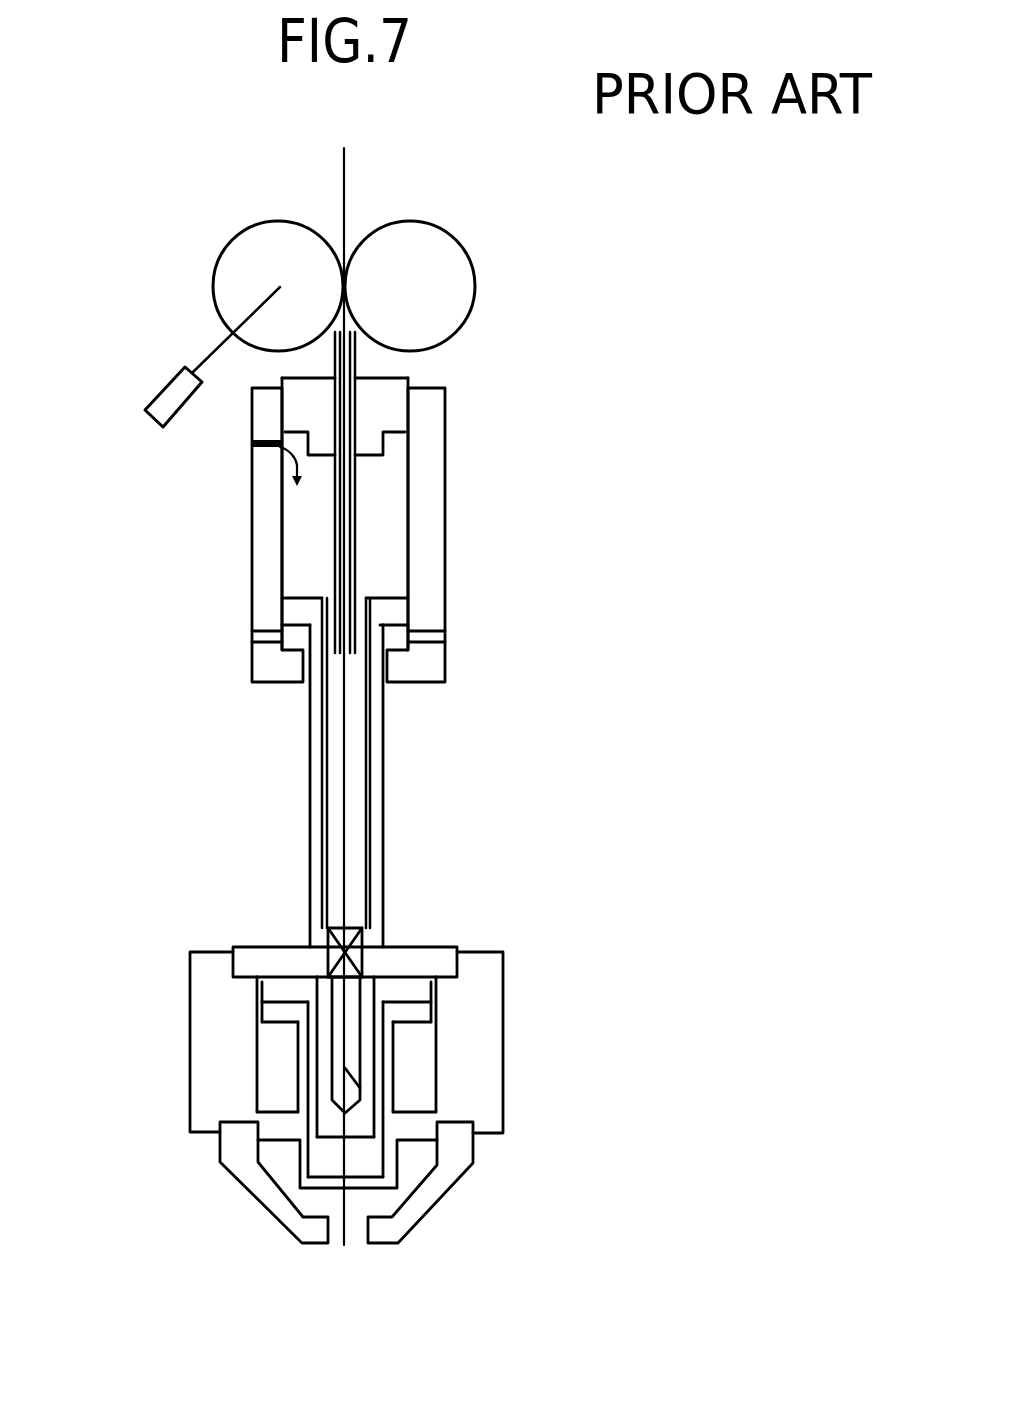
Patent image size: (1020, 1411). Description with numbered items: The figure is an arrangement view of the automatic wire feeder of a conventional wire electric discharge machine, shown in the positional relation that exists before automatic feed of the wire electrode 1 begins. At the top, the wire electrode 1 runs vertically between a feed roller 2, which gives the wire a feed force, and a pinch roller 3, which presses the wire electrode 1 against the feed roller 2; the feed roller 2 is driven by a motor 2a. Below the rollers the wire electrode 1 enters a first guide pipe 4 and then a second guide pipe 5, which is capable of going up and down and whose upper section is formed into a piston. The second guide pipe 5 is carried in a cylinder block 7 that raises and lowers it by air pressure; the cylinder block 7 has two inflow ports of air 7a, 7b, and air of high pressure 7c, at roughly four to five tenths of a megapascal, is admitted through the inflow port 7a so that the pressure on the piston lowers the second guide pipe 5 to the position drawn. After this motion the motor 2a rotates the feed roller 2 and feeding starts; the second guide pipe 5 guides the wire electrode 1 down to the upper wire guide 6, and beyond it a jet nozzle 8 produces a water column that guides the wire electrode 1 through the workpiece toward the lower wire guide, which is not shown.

The wire electrode 1 is at (347, 173).
The feed roller 2 is at (220, 257).
The pinch roller 3 is at (473, 259).
The motor 2a is at (152, 386).
The first guide pipe 4 is at (355, 367).
The second guide pipe 5 is at (385, 768).
The upper wire guide 6 is at (420, 946).
The cylinder block 7 is at (447, 548).
The inflow port of air 7a is at (268, 446).
The inflow port of air 7b is at (252, 632).
The air of high pressure 7c is at (252, 443).
The jet nozzle 8 is at (397, 1173).